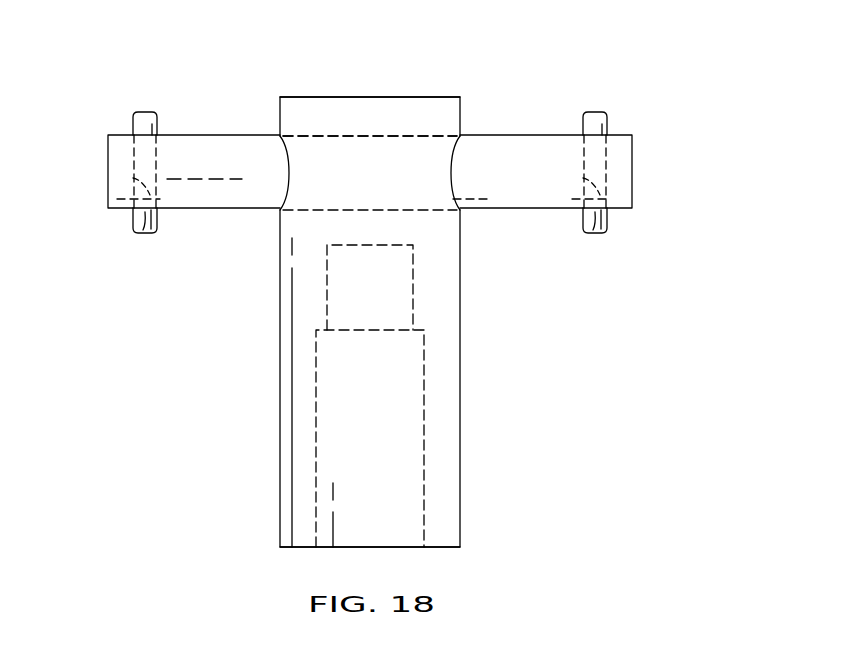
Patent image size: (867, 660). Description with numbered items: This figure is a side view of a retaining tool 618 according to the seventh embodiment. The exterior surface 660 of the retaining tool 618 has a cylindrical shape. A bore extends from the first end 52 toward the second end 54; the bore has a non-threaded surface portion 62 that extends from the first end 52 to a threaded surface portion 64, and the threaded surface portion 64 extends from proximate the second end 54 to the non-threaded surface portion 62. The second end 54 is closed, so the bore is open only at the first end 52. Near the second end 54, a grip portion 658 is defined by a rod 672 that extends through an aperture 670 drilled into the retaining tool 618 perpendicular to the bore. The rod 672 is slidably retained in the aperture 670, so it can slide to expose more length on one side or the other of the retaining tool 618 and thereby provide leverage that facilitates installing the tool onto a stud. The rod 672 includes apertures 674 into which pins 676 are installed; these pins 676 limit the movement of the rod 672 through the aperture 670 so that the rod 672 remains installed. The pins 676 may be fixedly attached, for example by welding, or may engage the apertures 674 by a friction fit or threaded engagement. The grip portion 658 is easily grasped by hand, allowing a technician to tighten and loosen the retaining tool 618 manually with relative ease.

The retaining tool 618 is at (522, 74).
The second end 54 is at (303, 97).
The aperture 670 is at (393, 134).
The pins 676 is at (143, 112).
The apertures 674 is at (143, 222).
The rod 672 is at (213, 190).
The grip portion 658 is at (504, 183).
The exterior surface 660 is at (280, 441).
The threaded surface portion 64 is at (413, 304).
The non-threaded surface portion 62 is at (424, 485).
The first end 52 is at (440, 548).